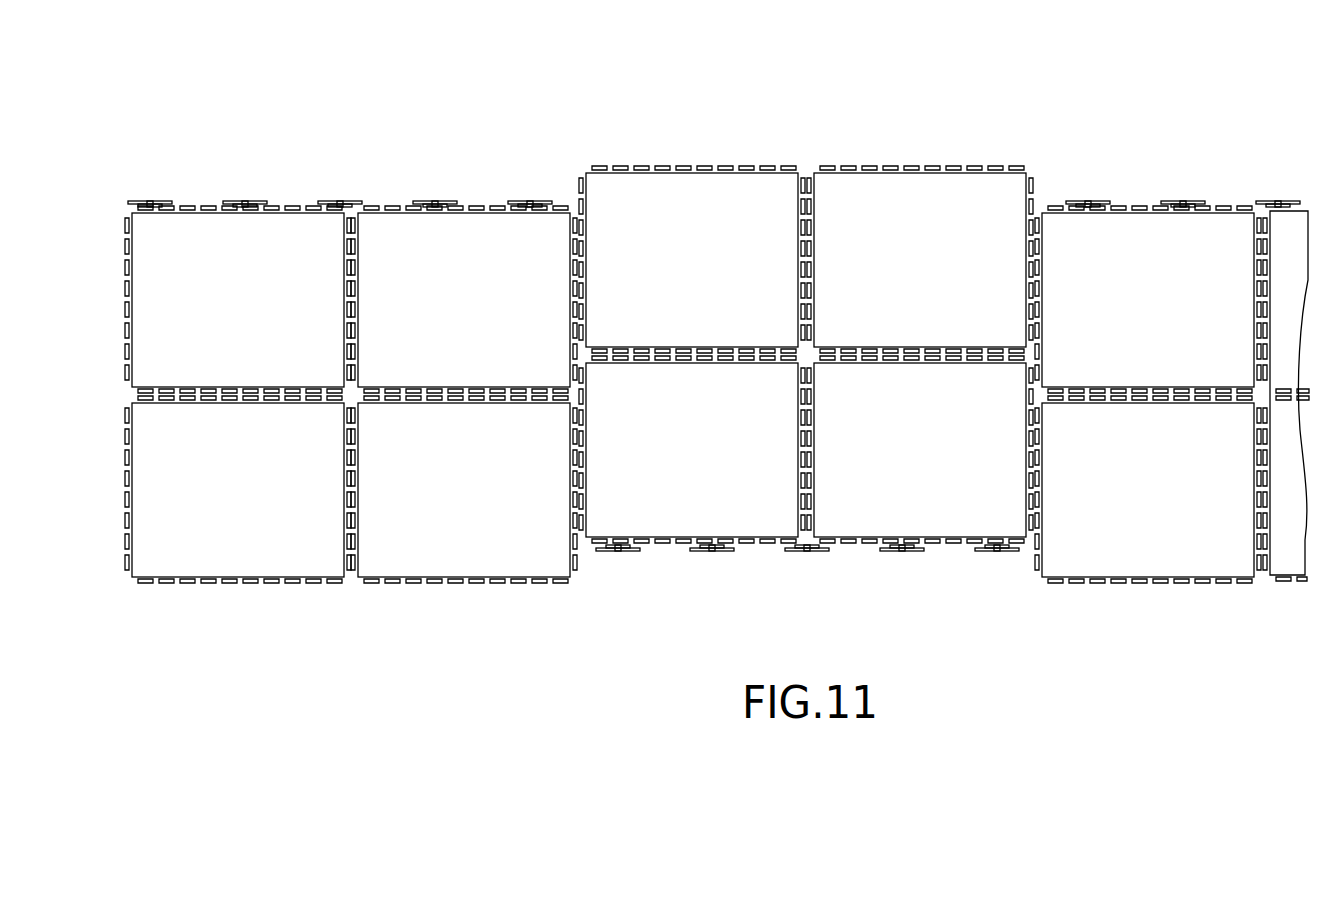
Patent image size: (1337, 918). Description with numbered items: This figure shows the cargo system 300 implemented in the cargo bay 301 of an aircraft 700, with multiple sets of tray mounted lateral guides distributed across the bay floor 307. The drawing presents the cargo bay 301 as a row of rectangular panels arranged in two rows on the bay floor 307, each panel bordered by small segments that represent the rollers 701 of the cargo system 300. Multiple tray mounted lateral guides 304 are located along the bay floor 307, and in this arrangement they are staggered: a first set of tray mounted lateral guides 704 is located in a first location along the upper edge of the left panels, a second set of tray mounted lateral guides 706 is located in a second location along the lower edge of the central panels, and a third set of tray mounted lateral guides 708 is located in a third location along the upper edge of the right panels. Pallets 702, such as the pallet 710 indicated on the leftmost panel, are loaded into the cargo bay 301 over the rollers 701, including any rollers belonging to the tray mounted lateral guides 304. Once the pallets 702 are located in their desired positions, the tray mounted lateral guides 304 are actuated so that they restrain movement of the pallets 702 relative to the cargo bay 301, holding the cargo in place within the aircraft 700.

The cargo system 300 is at (319, 328).
The cargo bay 301 is at (806, 313).
The aircraft 700 is at (1053, 305).
The bay floor 307 is at (1004, 76).
The pallets 702 is at (272, 250).
The tray mounted lateral guide 304 is at (339, 194).
The first set of tray mounted lateral guides 704 is at (425, 194).
The third set of tray mounted lateral guides 708 is at (1194, 194).
The pallet 710 is at (172, 304).
The rollers 701 is at (309, 586).
The second set of tray mounted lateral guides 706 is at (784, 557).